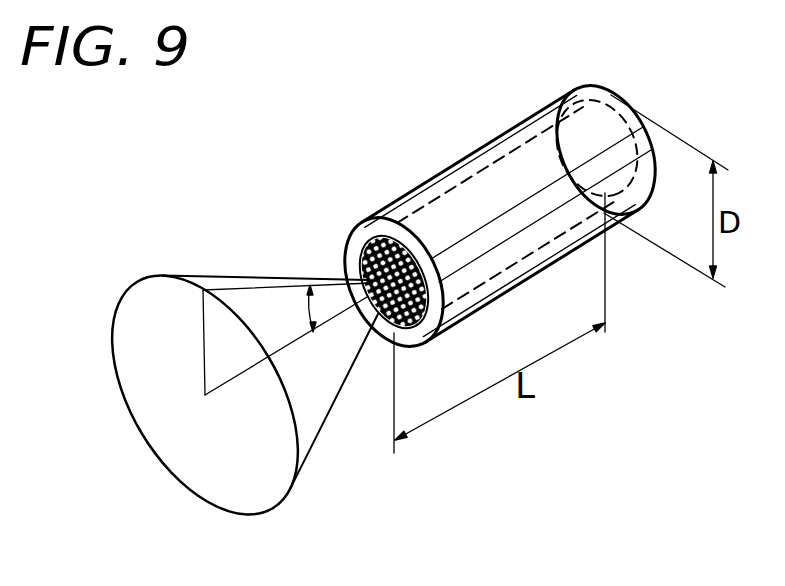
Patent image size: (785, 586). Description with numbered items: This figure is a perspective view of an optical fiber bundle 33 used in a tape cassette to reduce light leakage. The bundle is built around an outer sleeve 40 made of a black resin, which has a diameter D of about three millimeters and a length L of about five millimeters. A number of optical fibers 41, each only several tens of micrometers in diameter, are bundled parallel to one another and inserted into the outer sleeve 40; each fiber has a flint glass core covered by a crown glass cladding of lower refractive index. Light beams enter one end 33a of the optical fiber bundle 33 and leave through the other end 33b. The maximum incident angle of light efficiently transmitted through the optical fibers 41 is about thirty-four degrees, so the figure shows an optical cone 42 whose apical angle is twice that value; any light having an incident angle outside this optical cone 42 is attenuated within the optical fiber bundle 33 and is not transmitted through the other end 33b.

The optical fiber bundle 33 is at (456, 122).
The one end of the optical fiber bundle 33a is at (412, 334).
The other end of the optical fiber bundle 33b is at (607, 95).
The outer sleeve 40 is at (362, 232).
The optical fibers 41 is at (362, 258).
The optical cone 42 is at (325, 417).